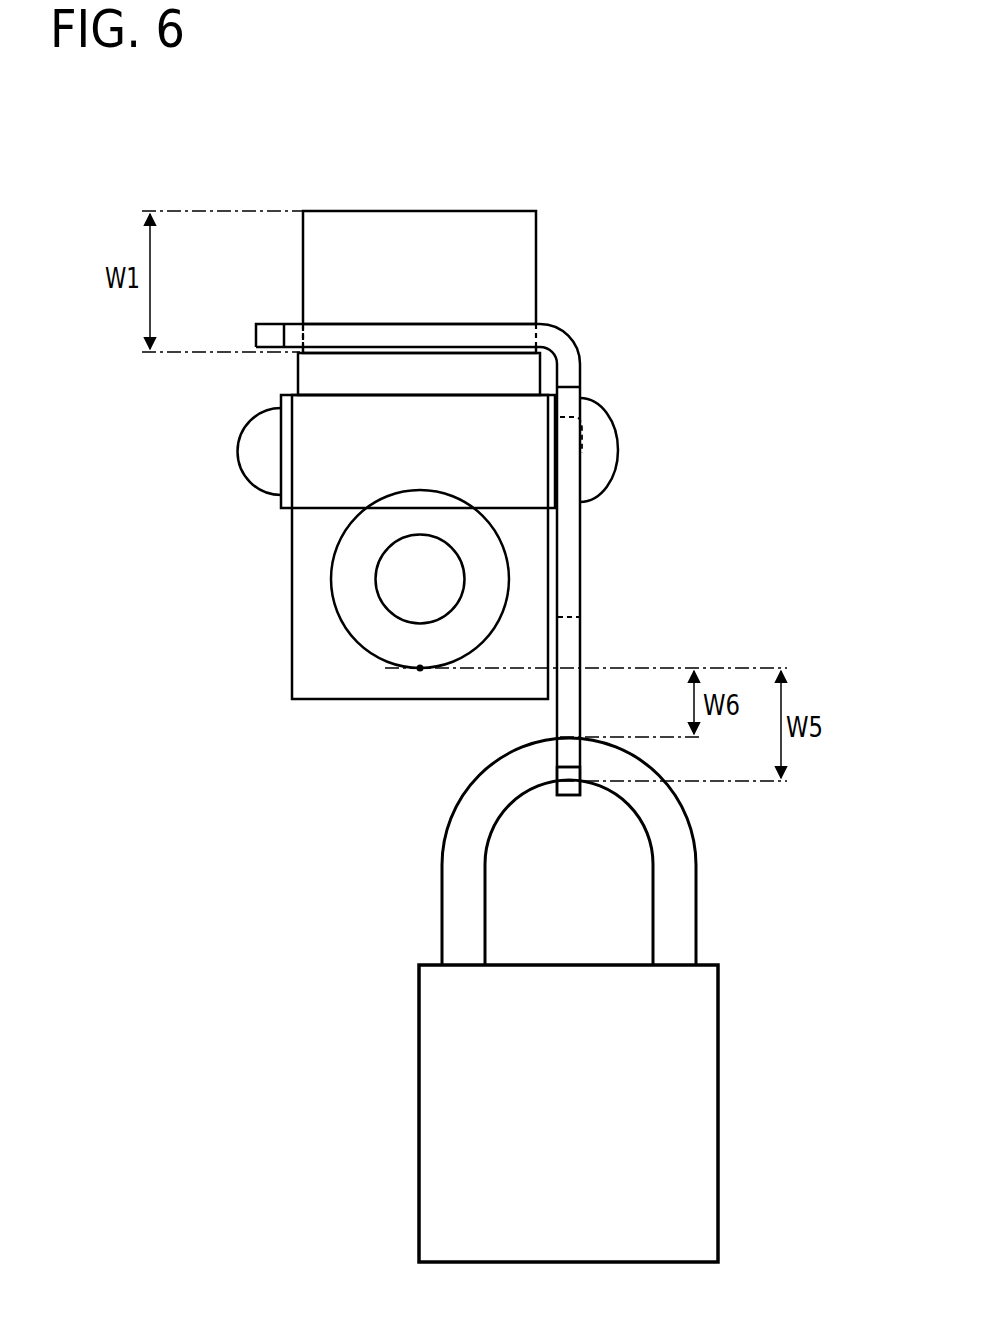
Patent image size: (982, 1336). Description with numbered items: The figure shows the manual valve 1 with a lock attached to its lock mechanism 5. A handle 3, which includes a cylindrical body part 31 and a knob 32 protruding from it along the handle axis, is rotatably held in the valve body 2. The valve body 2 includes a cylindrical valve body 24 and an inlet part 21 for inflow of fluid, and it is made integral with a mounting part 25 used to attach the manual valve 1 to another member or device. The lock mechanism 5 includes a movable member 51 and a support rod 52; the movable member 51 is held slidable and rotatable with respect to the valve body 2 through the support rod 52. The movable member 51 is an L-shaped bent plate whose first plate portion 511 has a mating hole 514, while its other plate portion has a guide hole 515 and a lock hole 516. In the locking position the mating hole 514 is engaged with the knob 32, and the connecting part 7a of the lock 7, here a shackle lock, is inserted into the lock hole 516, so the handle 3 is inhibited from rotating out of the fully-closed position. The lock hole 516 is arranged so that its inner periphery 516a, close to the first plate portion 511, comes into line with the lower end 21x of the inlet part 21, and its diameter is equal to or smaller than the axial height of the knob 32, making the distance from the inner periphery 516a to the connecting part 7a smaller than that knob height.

The manual valve 1 is at (527, 139).
The valve body 2 is at (311, 707).
The handle 3 is at (677, 222).
The lock mechanism 5 is at (742, 348).
The lock 7 is at (430, 1070).
The connecting part 7a is at (453, 858).
The inlet part 21 is at (336, 548).
The lower end 21x is at (420, 670).
The valve body 24 is at (308, 645).
The mounting part 25 is at (327, 402).
The body part 31 is at (487, 362).
The knob 32 is at (521, 243).
The movable member 51 is at (598, 355).
The support rod 52 is at (615, 440).
The first plate portion 511 is at (407, 333).
The mating hole 514 is at (303, 340).
The guide hole 515 is at (582, 453).
The lock hole 516 is at (570, 708).
The inner periphery 516a is at (568, 666).